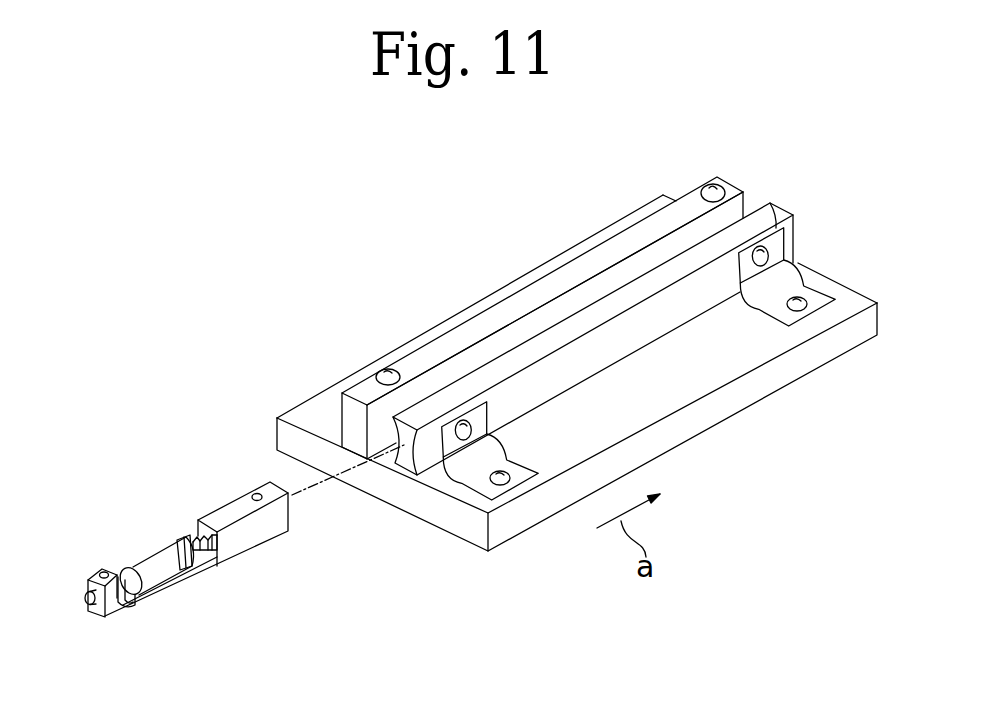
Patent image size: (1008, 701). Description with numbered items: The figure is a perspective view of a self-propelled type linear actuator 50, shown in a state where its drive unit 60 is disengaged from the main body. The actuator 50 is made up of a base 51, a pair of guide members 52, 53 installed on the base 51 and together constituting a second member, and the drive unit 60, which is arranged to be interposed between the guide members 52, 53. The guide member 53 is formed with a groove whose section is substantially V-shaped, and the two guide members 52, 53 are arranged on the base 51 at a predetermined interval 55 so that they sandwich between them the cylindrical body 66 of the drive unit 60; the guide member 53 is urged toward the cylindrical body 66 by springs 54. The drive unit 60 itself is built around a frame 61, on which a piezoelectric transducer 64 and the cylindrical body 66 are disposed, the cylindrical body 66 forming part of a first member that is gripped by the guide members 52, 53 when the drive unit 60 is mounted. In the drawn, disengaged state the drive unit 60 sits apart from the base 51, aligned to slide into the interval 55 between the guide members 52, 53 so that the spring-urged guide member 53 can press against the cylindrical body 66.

The actuator 50 is at (577, 338).
The base 51 is at (708, 432).
The guide member 52 is at (733, 184).
The guide member 53 is at (772, 216).
The springs 54 is at (782, 281).
The predetermined interval 55 is at (567, 303).
The drive unit 60 is at (213, 543).
The frame 61 is at (250, 533).
The piezoelectric transducer 64 is at (195, 539).
The cylindrical body 66 is at (135, 556).